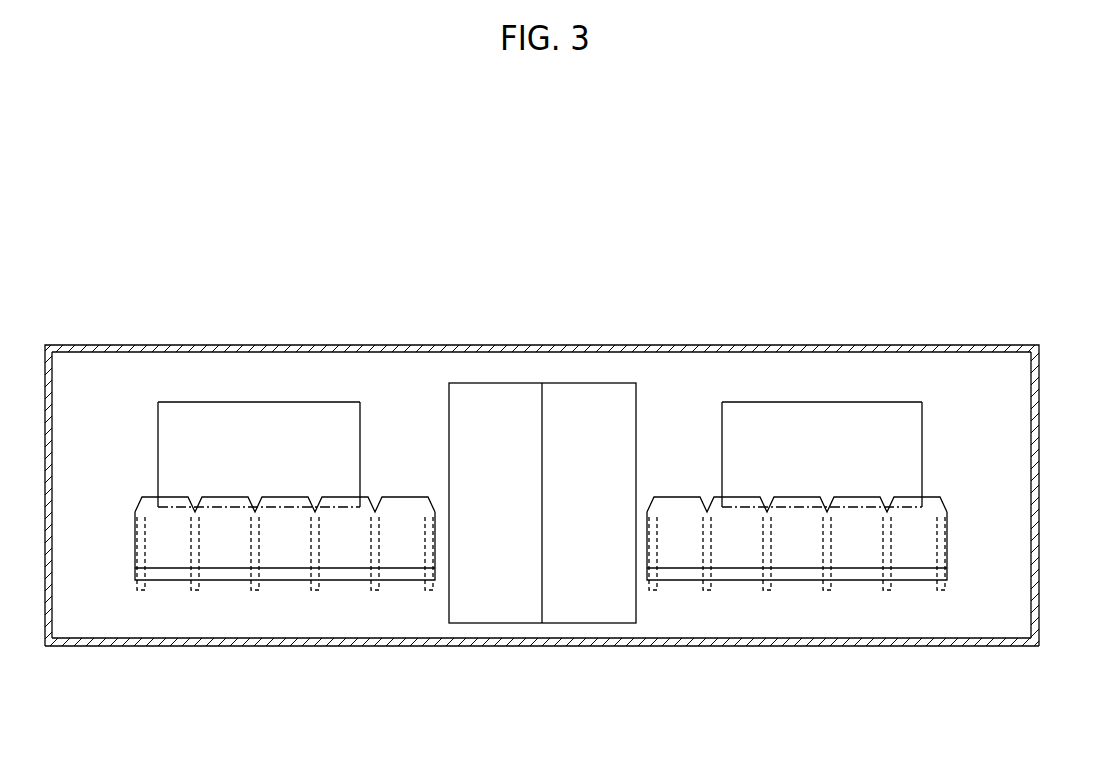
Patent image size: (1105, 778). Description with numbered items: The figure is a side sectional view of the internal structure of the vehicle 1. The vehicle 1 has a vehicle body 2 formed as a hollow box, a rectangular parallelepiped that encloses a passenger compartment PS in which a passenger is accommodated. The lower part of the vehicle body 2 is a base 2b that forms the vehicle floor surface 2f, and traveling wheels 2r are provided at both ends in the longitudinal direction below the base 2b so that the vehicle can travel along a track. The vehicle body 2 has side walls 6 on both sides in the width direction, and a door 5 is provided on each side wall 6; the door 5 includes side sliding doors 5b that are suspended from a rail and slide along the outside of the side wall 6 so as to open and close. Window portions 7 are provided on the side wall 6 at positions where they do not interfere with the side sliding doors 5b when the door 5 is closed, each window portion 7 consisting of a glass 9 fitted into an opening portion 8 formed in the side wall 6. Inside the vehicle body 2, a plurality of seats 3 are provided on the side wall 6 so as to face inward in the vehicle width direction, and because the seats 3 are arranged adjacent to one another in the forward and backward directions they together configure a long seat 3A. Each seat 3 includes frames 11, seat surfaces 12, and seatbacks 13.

The vehicle 1 is at (893, 310).
The vehicle body 2 is at (688, 345).
The traveling wheel 2r is at (425, 345).
The vehicle floor surface 2f is at (350, 640).
The base 2b is at (768, 646).
The seat 3 is at (541, 474).
The long seat 3A is at (265, 497).
The door 5 is at (542, 572).
The side sliding door 5b is at (567, 623).
The side wall 6 is at (1022, 448).
The window portion 7 is at (541, 404).
The opening portion 8 is at (175, 400).
The glass 9 is at (178, 438).
The frame 11 is at (383, 527).
The seat surface 12 is at (225, 565).
The seatback 13 is at (217, 525).
The passenger compartment PS is at (660, 378).